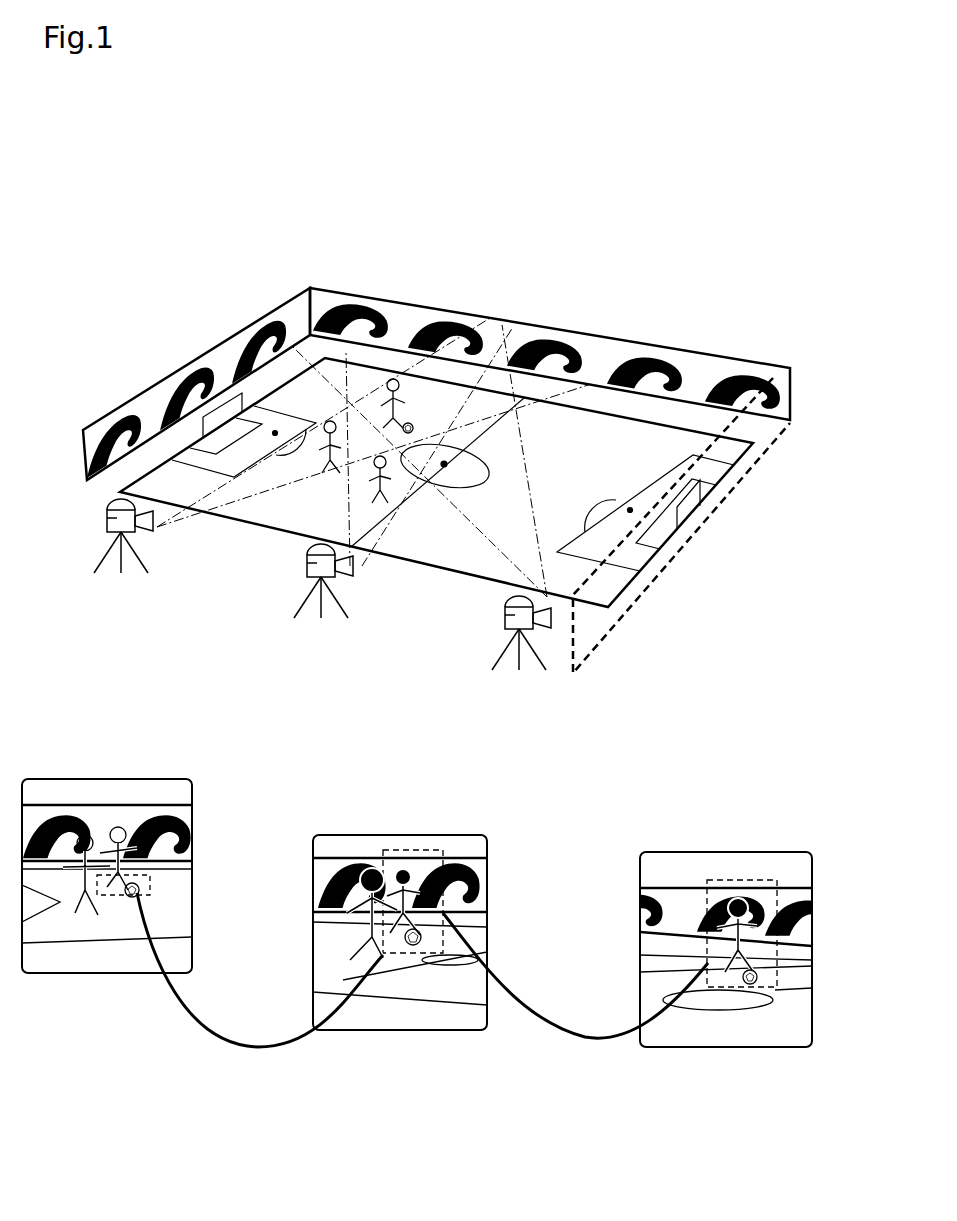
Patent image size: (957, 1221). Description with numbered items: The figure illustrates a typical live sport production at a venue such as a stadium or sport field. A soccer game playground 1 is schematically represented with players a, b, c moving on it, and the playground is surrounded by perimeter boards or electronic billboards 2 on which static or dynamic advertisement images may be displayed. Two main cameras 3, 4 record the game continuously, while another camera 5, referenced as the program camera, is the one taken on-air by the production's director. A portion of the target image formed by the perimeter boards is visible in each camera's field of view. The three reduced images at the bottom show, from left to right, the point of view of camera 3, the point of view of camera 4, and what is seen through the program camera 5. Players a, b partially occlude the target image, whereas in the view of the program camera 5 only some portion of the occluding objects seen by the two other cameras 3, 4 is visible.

The soccer game playground 1 is at (660, 443).
The perimeter boards or electronic billboards 2 is at (227, 340).
The main camera 3 is at (107, 517).
The main camera 4 is at (307, 567).
The PGM camera 5 is at (505, 618).
The player a is at (435, 686).
The player b is at (202, 677).
The player c is at (374, 719).